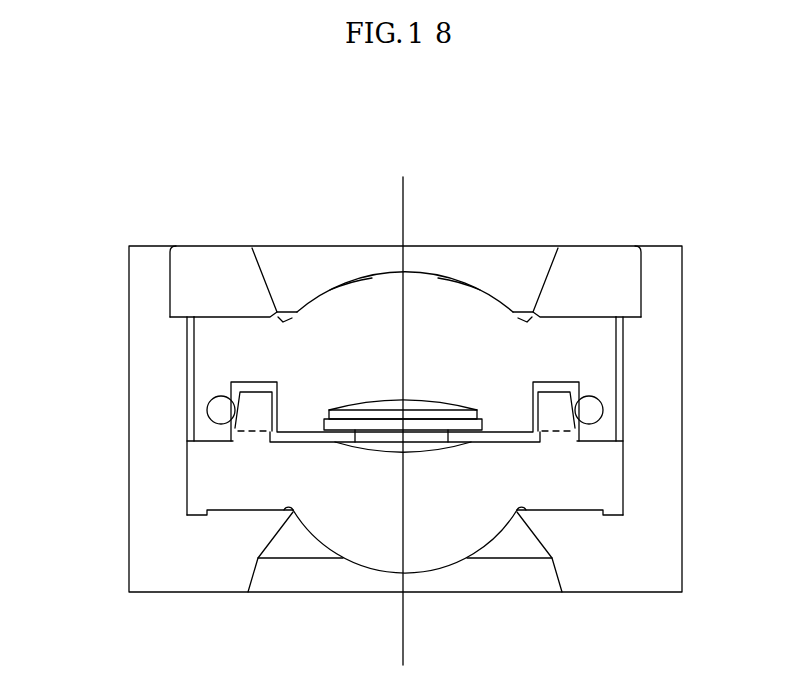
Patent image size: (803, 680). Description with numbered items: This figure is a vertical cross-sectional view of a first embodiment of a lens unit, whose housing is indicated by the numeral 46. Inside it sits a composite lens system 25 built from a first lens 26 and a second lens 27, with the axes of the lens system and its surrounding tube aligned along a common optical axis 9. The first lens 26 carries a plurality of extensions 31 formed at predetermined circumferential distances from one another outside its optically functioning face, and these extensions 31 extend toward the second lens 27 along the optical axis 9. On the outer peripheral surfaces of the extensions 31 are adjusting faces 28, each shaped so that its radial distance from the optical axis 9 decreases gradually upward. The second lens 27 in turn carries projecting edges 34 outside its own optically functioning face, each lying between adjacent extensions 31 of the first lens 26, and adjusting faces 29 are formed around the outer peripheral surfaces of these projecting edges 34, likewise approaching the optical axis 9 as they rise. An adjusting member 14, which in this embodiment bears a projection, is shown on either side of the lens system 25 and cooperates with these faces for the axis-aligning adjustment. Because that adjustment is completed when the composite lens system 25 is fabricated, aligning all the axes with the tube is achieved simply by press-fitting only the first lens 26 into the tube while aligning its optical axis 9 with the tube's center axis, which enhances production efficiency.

The lens unit housing 46 is at (55, 187).
The optical axis 9 is at (406, 192).
The composite lens system 25 is at (333, 285).
The first lens 26 is at (370, 575).
The second lens 27 is at (360, 278).
The projecting edges 34 is at (228, 383).
The adjusting faces 28 is at (232, 432).
The adjusting faces 29 is at (238, 393).
The adjusting member 14 is at (207, 406).
The extensions 31 is at (212, 440).